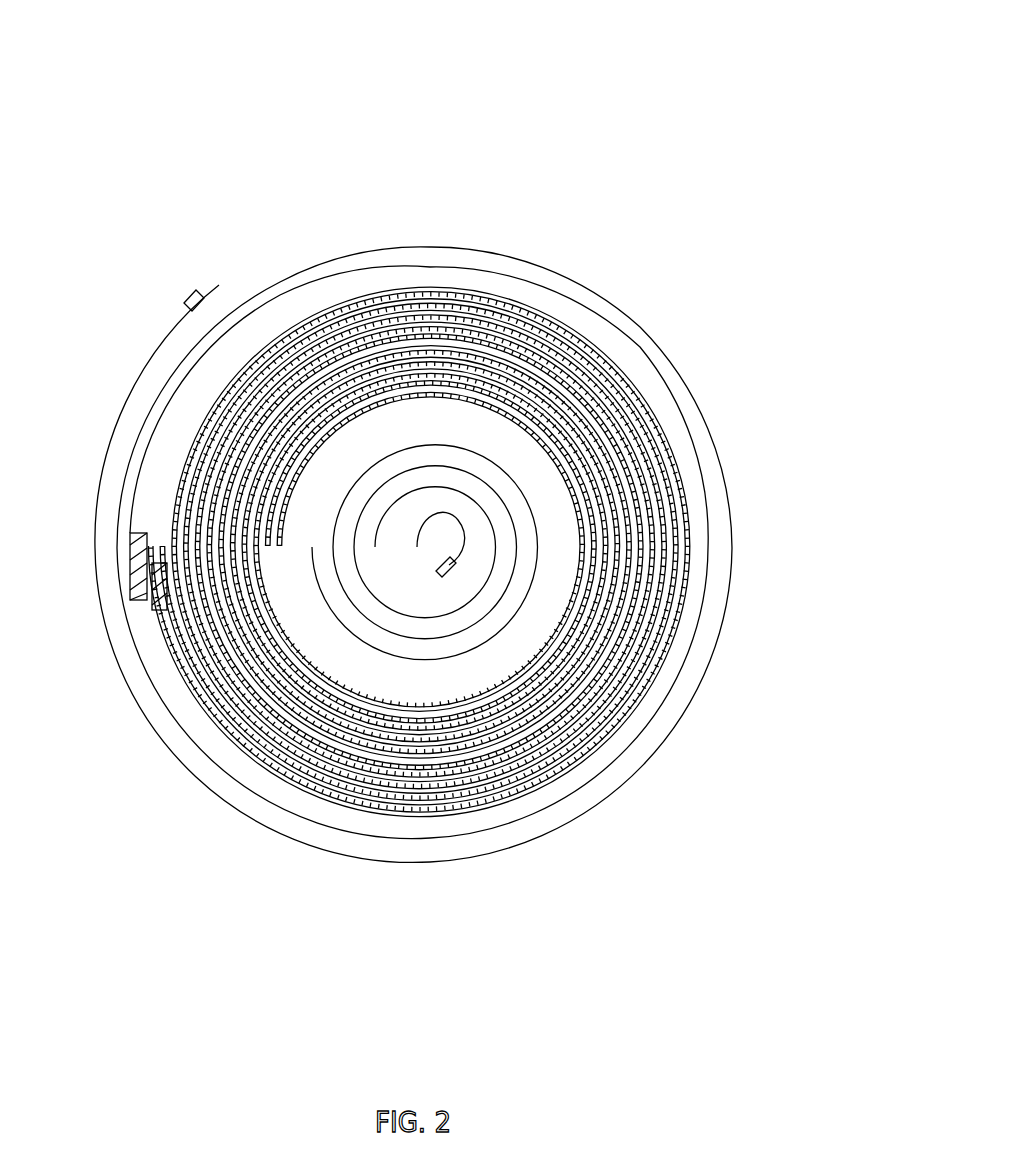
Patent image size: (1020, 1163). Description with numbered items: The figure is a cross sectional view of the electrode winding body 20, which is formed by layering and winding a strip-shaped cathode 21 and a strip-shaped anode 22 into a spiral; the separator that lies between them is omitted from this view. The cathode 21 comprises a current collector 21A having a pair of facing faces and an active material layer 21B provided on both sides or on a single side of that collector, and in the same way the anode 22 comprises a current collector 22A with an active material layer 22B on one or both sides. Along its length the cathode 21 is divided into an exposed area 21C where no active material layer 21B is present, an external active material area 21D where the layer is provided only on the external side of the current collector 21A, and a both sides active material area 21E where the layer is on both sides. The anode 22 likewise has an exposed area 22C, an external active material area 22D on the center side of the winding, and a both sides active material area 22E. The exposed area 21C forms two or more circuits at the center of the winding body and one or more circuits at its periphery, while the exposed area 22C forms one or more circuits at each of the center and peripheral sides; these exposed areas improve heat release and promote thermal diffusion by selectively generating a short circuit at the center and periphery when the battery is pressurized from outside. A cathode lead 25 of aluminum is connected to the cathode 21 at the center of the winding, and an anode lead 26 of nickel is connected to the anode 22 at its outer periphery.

The electrode winding body 20 is at (622, 88).
The cathode 21 is at (419, 474).
The current collector 21A is at (404, 302).
The active material layer 21B is at (378, 180).
The exposed area 21C is at (575, 352).
The external active material area 21D is at (486, 484).
The both sides active material area 21E is at (660, 447).
The anode 22 is at (419, 639).
The current collector 22A is at (420, 808).
The active material layer 22B is at (473, 812).
The exposed area 22C is at (305, 556).
The external active material area 22D is at (356, 436).
The both sides active material area 22E is at (604, 757).
The cathode lead 25 is at (447, 577).
The anode lead 26 is at (190, 291).